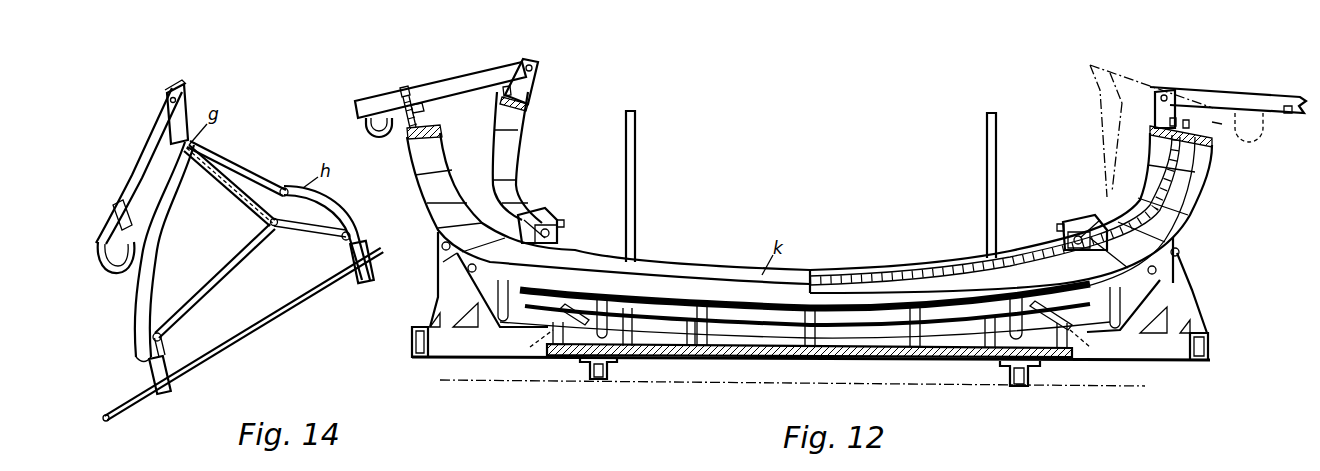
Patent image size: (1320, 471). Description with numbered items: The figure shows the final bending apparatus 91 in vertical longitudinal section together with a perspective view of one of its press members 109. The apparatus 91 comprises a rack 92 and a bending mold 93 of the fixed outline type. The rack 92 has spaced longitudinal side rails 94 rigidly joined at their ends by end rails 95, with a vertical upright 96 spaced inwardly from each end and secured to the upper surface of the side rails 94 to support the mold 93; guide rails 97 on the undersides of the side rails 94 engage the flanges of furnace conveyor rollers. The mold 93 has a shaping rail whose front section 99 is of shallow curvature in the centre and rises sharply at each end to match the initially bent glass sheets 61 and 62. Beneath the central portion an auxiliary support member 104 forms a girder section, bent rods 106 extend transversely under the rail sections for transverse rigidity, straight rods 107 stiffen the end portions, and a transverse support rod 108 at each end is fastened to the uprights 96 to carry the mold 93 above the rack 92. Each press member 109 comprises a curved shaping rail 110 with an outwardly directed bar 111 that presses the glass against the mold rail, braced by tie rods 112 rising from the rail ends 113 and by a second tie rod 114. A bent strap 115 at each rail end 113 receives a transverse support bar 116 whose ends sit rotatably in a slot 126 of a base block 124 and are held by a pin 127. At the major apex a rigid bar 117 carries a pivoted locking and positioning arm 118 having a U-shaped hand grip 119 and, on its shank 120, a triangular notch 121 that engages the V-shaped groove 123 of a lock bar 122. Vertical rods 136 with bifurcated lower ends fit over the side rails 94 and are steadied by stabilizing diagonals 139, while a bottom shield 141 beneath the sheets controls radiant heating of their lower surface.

In FIG. 12, the glass sheet 61 is at (1167, 176).
In FIG. 12, the glass sheet 62 is at (1172, 192).
In FIG. 12, the bending apparatus 91 is at (760, 223).
In FIG. 12, the rack 92 is at (455, 335).
In FIG. 12, the bending mold 93 is at (665, 260).
In FIG. 12, the side rails 94 is at (1145, 348).
In FIG. 12, the end rails 95 is at (412, 344).
In FIG. 12, the vertical upright 96 is at (467, 270).
In FIG. 12, the guide rails 97 is at (593, 380).
In FIG. 12, the front section 99 is at (720, 280).
In FIG. 12, the auxiliary support member 104 is at (553, 292).
In FIG. 12, the bent rods 106 is at (897, 352).
In FIG. 12, the straight rods 107 is at (452, 268).
In FIG. 12, the transverse support rod 108 is at (442, 248).
In FIG. 14, the press member 109 is at (250, 165).
In FIG. 12, the press member 109 is at (512, 128).
In FIG. 14, the shaping rail 110 is at (140, 306).
In FIG. 12, the shaping rail 110 is at (497, 153).
In FIG. 14, the outwardly directed bar 111 is at (213, 175).
In FIG. 12, the outwardly directed bar 111 is at (505, 92).
In FIG. 14, the tie rods 112 is at (223, 268).
In FIG. 14, the rail ends 113 is at (162, 338).
In FIG. 14, the second tie rod 114 is at (263, 178).
In FIG. 14, the bent strap 115 is at (365, 240).
In FIG. 14, the transverse support bar 116 is at (255, 328).
In FIG. 12, the transverse support bar 116 is at (537, 249).
In FIG. 14, the rigid bar 117 is at (178, 118).
In FIG. 12, the rigid bar 117 is at (533, 83).
In FIG. 14, the locking and positioning arm 118 is at (158, 135).
In FIG. 12, the locking and positioning arm 118 is at (442, 92).
In FIG. 14, the U-shaped hand grip 119 is at (110, 272).
In FIG. 12, the U-shaped hand grip 119 is at (382, 137).
In FIG. 14, the shank 120 is at (138, 168).
In FIG. 12, the shank 120 is at (1250, 107).
In FIG. 14, the triangular notch 121 is at (120, 203).
In FIG. 12, the triangular notch 121 is at (406, 100).
In FIG. 12, the lock bar 122 is at (418, 109).
In FIG. 12, the V-shaped groove 123 is at (405, 82).
In FIG. 12, the base block 124 is at (560, 216).
In FIG. 12, the slot 126 is at (530, 220).
In FIG. 12, the pin 127 is at (564, 226).
In FIG. 12, the vertical rods 136 is at (636, 178).
In FIG. 12, the stabilizing diagonals 139 is at (1058, 315).
In FIG. 12, the bottom shield 141 is at (673, 361).